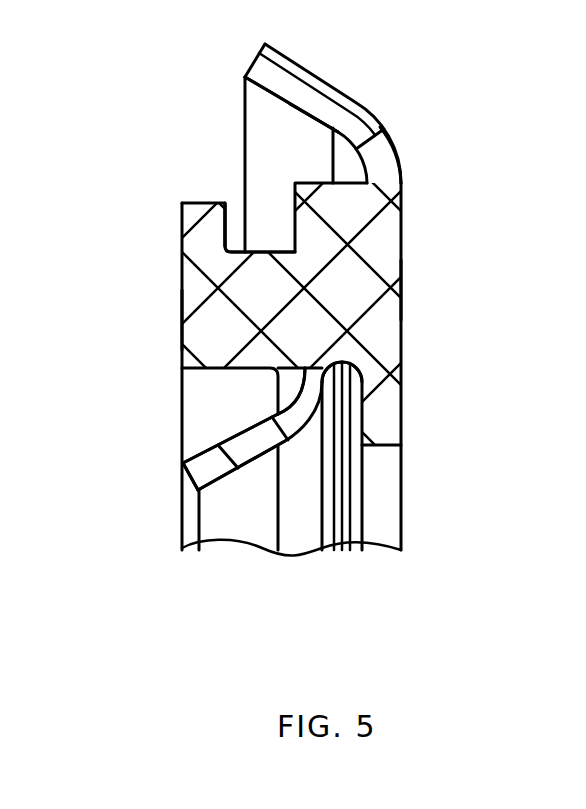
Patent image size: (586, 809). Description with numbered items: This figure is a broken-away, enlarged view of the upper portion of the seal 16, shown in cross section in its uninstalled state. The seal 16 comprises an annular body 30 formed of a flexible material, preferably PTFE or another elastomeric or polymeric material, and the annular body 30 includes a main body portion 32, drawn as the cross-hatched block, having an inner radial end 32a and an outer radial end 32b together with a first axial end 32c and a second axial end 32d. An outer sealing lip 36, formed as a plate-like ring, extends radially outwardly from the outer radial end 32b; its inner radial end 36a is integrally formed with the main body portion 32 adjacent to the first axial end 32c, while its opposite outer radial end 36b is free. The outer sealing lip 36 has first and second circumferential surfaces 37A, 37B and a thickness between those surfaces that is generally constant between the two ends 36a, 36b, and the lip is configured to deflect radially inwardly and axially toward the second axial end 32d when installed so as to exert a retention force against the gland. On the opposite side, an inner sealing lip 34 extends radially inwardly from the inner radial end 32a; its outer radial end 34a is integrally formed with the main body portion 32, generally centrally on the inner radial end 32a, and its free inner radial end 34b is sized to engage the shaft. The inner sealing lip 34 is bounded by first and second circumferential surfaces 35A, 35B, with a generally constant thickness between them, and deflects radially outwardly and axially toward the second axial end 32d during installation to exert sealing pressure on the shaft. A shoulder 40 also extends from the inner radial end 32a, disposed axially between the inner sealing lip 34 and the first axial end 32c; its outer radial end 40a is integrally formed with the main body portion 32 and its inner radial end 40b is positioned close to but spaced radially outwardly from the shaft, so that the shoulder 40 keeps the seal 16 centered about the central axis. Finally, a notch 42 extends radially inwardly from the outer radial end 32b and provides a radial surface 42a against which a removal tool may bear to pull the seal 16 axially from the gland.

The seal 16 is at (140, 90).
The annular body 30 is at (410, 303).
The main body portion 32 is at (190, 287).
The inner radial end 32a is at (222, 368).
The outer radial end 32b is at (317, 183).
The first axial end 32c is at (403, 285).
The second axial end 32d is at (182, 316).
The inner sealing lip 34 is at (168, 452).
The outer radial end of inner sealing lip 34a is at (305, 369).
The inner radial end of inner sealing lip 34b is at (185, 472).
The first circumferential surface of inner sealing lip 35A is at (226, 484).
The second circumferential surface of inner sealing lip 35B is at (236, 446).
The outer sealing lip 36 is at (395, 106).
The inner radial end of outer sealing lip 36a is at (382, 181).
The outer radial end of outer sealing lip 36b is at (259, 52).
The first circumferential surface of outer sealing lip 37A is at (315, 120).
The second circumferential surface of outer sealing lip 37B is at (305, 122).
The shoulder 40 is at (388, 406).
The outer radial end of shoulder 40a is at (383, 382).
The inner radial end of shoulder 40b is at (378, 447).
The notch 42 is at (258, 250).
The radial surface 42a is at (229, 218).